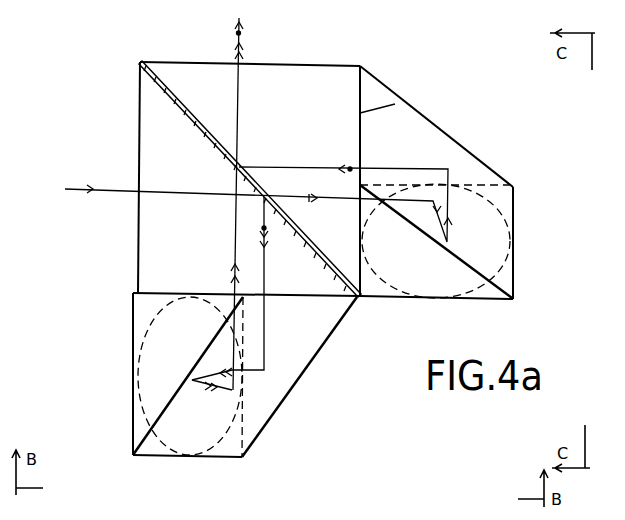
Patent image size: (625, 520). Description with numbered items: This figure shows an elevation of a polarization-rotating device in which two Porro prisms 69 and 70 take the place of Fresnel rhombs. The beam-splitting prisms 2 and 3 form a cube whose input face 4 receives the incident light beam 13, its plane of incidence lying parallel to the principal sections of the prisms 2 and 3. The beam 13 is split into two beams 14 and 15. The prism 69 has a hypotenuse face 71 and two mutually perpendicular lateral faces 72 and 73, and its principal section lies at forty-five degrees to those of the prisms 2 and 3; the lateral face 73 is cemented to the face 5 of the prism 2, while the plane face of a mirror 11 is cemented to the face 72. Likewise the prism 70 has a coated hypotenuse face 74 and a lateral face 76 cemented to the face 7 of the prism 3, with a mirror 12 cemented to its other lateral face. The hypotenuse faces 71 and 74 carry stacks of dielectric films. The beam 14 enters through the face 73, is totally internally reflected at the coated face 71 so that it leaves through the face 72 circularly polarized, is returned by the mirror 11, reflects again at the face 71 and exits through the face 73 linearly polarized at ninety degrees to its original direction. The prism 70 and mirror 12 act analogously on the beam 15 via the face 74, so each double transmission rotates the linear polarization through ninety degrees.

The prism 2 is at (234, 164).
The prism 3 is at (187, 70).
The input face 4 is at (140, 137).
The face 5 is at (175, 293).
The face 7 is at (360, 103).
The mirror 11 is at (148, 427).
The mirror 12 is at (473, 298).
The incident light beam 13 is at (258, 203).
The beam 14 is at (265, 277).
The beam 15 is at (368, 203).
The Porro prism 69 is at (303, 375).
The Porro prism 70 is at (515, 282).
The hypotenuse face 71 is at (320, 342).
The lateral face 72 is at (225, 459).
The lateral face 73 is at (150, 296).
The hypotenuse face 74 is at (428, 140).
The lateral face 76 is at (395, 104).